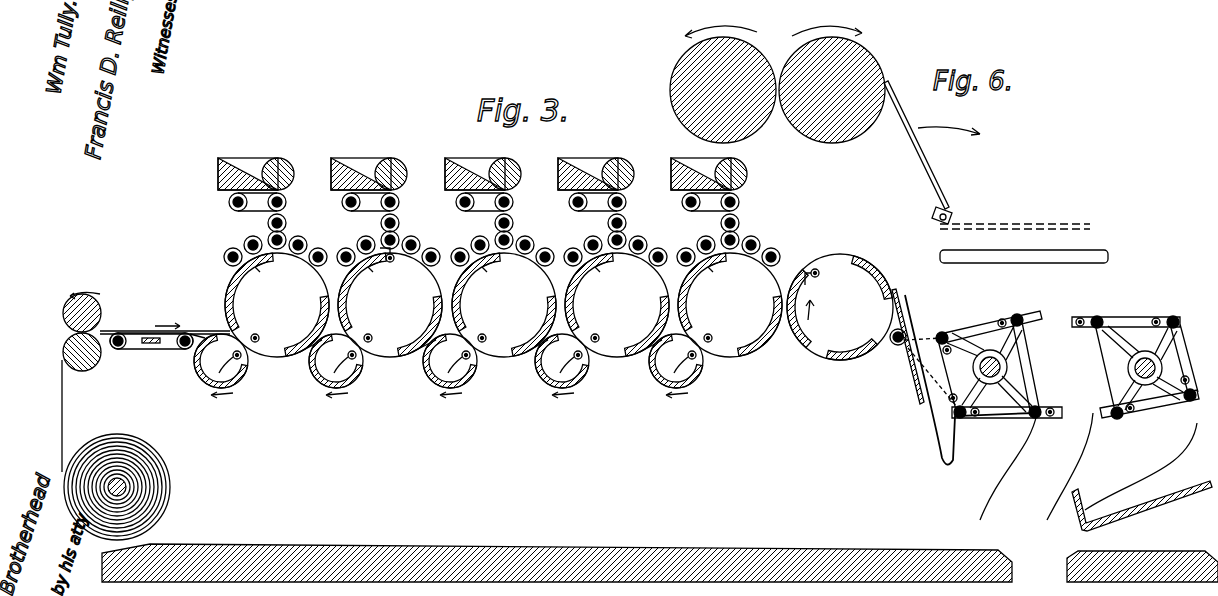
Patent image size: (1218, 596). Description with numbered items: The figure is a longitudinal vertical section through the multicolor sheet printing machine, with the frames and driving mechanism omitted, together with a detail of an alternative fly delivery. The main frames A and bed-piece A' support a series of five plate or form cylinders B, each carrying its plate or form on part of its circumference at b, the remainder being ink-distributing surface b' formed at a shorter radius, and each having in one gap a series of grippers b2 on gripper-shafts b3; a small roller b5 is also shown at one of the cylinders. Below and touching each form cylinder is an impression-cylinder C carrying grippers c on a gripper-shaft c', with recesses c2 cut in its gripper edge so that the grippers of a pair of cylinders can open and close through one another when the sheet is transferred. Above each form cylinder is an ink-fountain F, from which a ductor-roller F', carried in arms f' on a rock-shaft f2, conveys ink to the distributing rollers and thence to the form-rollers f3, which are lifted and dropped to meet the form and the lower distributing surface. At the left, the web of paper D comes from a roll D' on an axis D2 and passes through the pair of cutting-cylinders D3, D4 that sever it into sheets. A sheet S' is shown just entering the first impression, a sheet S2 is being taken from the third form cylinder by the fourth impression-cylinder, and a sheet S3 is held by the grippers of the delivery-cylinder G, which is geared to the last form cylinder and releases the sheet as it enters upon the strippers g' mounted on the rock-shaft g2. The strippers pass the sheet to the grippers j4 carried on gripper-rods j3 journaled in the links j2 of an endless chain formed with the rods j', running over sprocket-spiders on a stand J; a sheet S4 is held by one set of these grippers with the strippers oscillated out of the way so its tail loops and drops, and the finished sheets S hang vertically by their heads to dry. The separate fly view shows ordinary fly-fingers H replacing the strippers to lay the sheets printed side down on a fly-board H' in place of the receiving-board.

In FIG. 3, the main frames A is at (557, 563).
In FIG. 3, the bed-piece A' is at (1142, 566).
In FIG. 3, the plate or form cylinders B is at (503, 305).
In FIG. 6, the plate or form cylinders B is at (723, 84).
In FIG. 3, the plate or form surface b is at (460, 304).
In FIG. 3, the ink-distributing surface b' is at (535, 305).
In FIG. 3, the grippers b2 is at (496, 343).
In FIG. 3, the gripper-shafts b3 is at (496, 330).
In FIG. 3, the cylinder roller b5 is at (394, 258).
In FIG. 3, the impression-cylinders C is at (448, 366).
In FIG. 3, the grippers c is at (455, 351).
In FIG. 3, the gripper-shaft c' is at (456, 368).
In FIG. 3, the recesses c2 is at (816, 279).
In FIG. 3, the web of paper D is at (146, 435).
In FIG. 3, the roll D' is at (151, 344).
In FIG. 3, the axis D2 is at (175, 350).
In FIG. 3, the cutting-cylinder D3 is at (88, 311).
In FIG. 3, the cutting-cylinder D4 is at (86, 354).
In FIG. 3, the ink-fountains F is at (482, 174).
In FIG. 3, the ductor-rollers F' is at (522, 202).
In FIG. 3, the arms f' is at (484, 202).
In FIG. 3, the rock-shafts f2 is at (232, 205).
In FIG. 3, the form-rollers f3 is at (501, 240).
In FIG. 3, the delivery-cylinder G is at (840, 307).
In FIG. 6, the delivery-cylinder G is at (832, 84).
In FIG. 3, the strippers g' is at (903, 317).
In FIG. 3, the rock-shaft g2 is at (918, 373).
In FIG. 6, the fly-fingers H is at (987, 155).
In FIG. 6, the fly-board H' is at (1024, 264).
In FIG. 3, the stand J is at (1065, 369).
In FIG. 3, the rods j' is at (1064, 361).
In FIG. 3, the links j2 is at (1072, 371).
In FIG. 3, the gripper-rods j3 is at (1075, 346).
In FIG. 3, the grippers j4 is at (1078, 363).
In FIG. 3, the separate sheets S is at (1096, 472).
In FIG. 3, the sheet S' is at (159, 324).
In FIG. 3, the sheet S2 is at (481, 359).
In FIG. 3, the sheet S3 is at (846, 346).
In FIG. 3, the sheet S4 is at (970, 380).